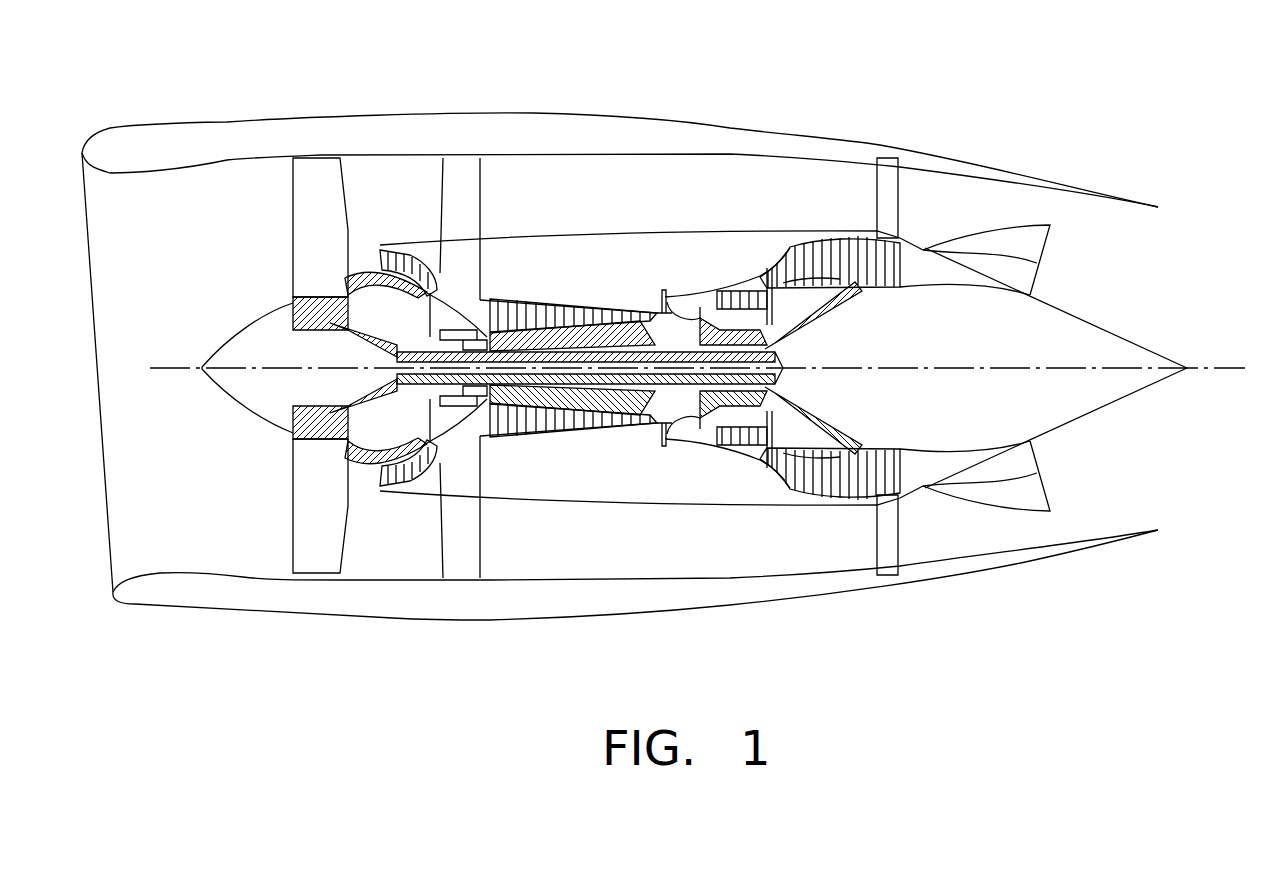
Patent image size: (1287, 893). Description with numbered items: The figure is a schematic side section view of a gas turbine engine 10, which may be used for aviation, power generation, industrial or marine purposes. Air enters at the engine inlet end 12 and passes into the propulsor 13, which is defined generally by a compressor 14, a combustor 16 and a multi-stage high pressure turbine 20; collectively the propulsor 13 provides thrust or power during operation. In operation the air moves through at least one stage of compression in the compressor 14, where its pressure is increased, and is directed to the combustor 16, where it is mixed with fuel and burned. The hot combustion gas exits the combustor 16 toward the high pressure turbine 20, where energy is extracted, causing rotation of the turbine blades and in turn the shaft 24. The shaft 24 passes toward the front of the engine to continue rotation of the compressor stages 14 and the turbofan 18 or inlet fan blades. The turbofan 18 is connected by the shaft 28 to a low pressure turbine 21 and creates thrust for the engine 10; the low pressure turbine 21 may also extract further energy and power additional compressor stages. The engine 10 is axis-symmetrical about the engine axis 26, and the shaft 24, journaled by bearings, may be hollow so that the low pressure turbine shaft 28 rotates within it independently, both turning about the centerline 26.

The gas turbine engine 10 is at (918, 97).
The engine inlet end 12 is at (103, 205).
The propulsor 13 is at (508, 200).
The compressor 14 is at (523, 297).
The combustor 16 is at (682, 290).
The turbofan 18 is at (277, 497).
The multi-stage high pressure turbine 20 is at (730, 280).
The low pressure turbine 21 is at (850, 433).
The shaft 24 is at (657, 427).
The engine axis 26 is at (1243, 368).
The low pressure turbine shaft 28 is at (803, 332).